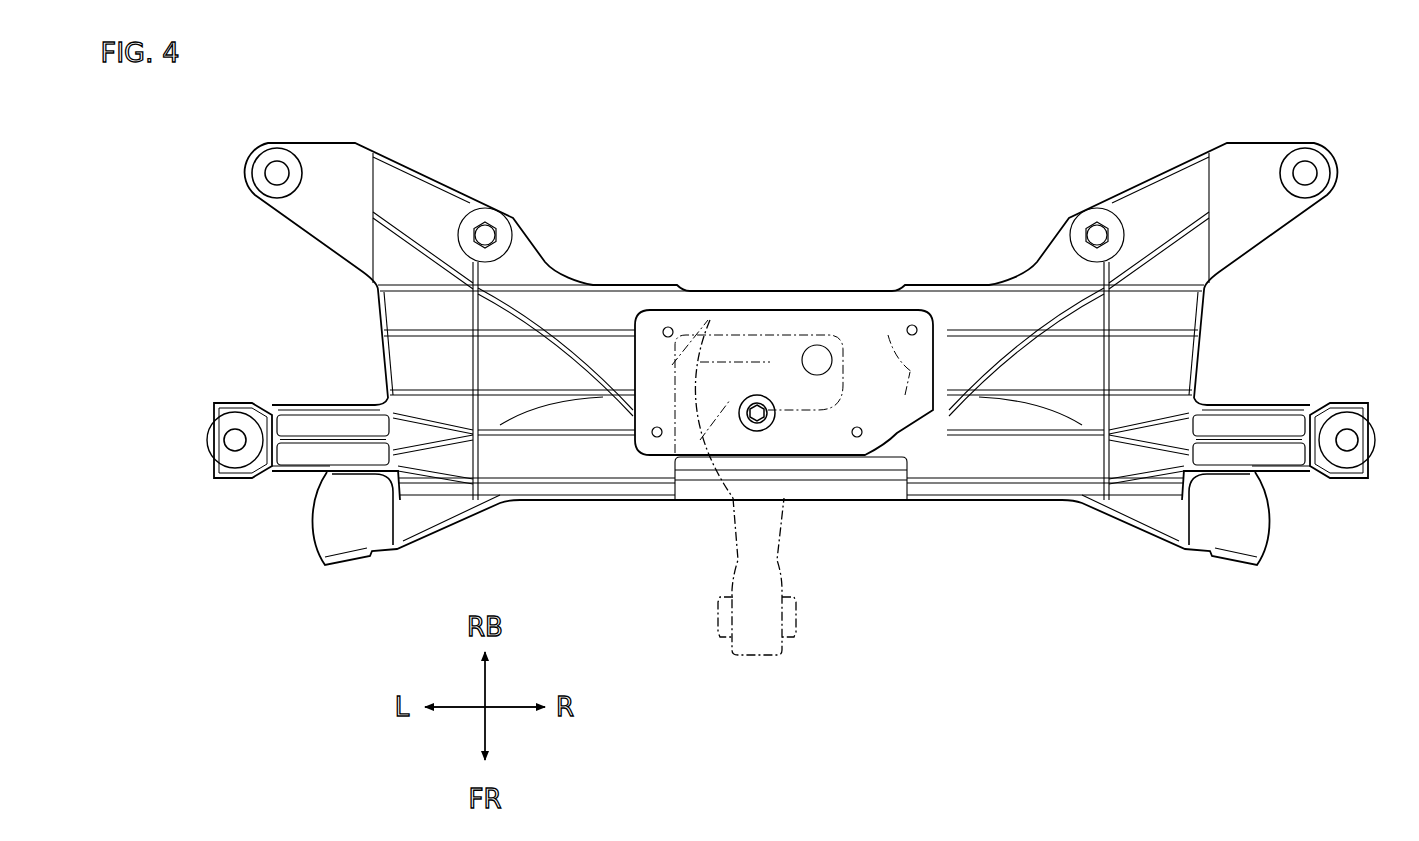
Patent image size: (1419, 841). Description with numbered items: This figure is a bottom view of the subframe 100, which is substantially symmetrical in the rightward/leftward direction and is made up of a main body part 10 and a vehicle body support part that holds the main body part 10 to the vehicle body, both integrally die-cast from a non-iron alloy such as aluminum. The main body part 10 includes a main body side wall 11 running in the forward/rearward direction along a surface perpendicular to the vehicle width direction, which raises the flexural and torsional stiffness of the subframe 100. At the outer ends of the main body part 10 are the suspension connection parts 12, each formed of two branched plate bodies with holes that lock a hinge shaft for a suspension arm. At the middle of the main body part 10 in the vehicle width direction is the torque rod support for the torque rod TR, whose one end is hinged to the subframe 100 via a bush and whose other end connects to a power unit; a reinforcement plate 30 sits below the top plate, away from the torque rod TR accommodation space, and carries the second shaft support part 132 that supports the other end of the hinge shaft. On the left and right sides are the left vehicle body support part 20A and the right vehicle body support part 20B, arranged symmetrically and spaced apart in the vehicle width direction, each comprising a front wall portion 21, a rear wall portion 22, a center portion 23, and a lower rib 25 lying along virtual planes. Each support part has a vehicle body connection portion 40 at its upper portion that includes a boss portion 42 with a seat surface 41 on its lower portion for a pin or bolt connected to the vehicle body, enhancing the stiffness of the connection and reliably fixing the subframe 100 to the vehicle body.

The subframe 100 is at (791, 353).
The main body part 10 is at (965, 503).
The main body side wall 11 is at (378, 318).
The suspension connection part 12 is at (265, 142).
The left vehicle body support part 20A is at (1350, 480).
The right vehicle body support part 20B is at (232, 480).
The front wall portion 21 is at (283, 475).
The rear wall portion 22 is at (318, 405).
The center portion 23 is at (316, 457).
The lower rib 25 is at (362, 440).
The reinforcement plate 30 is at (820, 380).
The second shaft support part 132 is at (752, 396).
The vehicle body connection portion 40 is at (222, 400).
The seat surface 41 is at (211, 432).
The boss portion 42 is at (211, 470).
The torque rod TR is at (784, 640).